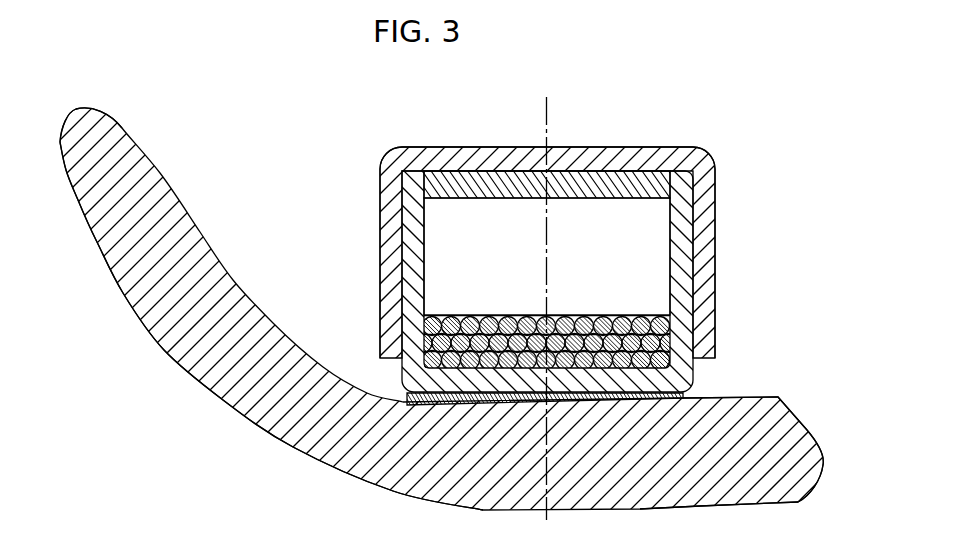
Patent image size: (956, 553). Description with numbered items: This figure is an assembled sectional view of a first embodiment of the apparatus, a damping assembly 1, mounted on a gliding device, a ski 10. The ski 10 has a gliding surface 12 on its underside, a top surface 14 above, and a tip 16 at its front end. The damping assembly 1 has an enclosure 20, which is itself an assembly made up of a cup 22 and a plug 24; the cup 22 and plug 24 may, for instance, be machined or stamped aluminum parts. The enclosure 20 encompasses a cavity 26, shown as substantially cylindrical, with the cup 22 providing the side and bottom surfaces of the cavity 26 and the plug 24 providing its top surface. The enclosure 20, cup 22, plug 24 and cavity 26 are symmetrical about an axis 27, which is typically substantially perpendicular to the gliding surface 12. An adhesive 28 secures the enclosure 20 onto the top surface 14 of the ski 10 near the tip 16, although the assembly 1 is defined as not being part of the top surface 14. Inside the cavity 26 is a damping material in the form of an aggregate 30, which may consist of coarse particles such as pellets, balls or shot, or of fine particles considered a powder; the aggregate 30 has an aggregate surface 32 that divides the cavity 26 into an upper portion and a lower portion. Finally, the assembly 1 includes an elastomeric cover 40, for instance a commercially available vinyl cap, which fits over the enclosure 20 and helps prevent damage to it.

The damping assembly 1 is at (365, 140).
The ski 10 is at (178, 261).
The gliding surface 12 is at (293, 448).
The top surface 14 is at (709, 397).
The tip 16 is at (127, 186).
The enclosure 20 is at (703, 277).
The cup 22 is at (678, 272).
The plug 24 is at (592, 183).
The cavity 26 is at (650, 247).
The axis 27 is at (544, 113).
The adhesive 28 is at (683, 397).
The aggregate 30 is at (436, 342).
The aggregate surface 32 is at (455, 313).
The elastomeric cover 40 is at (680, 153).